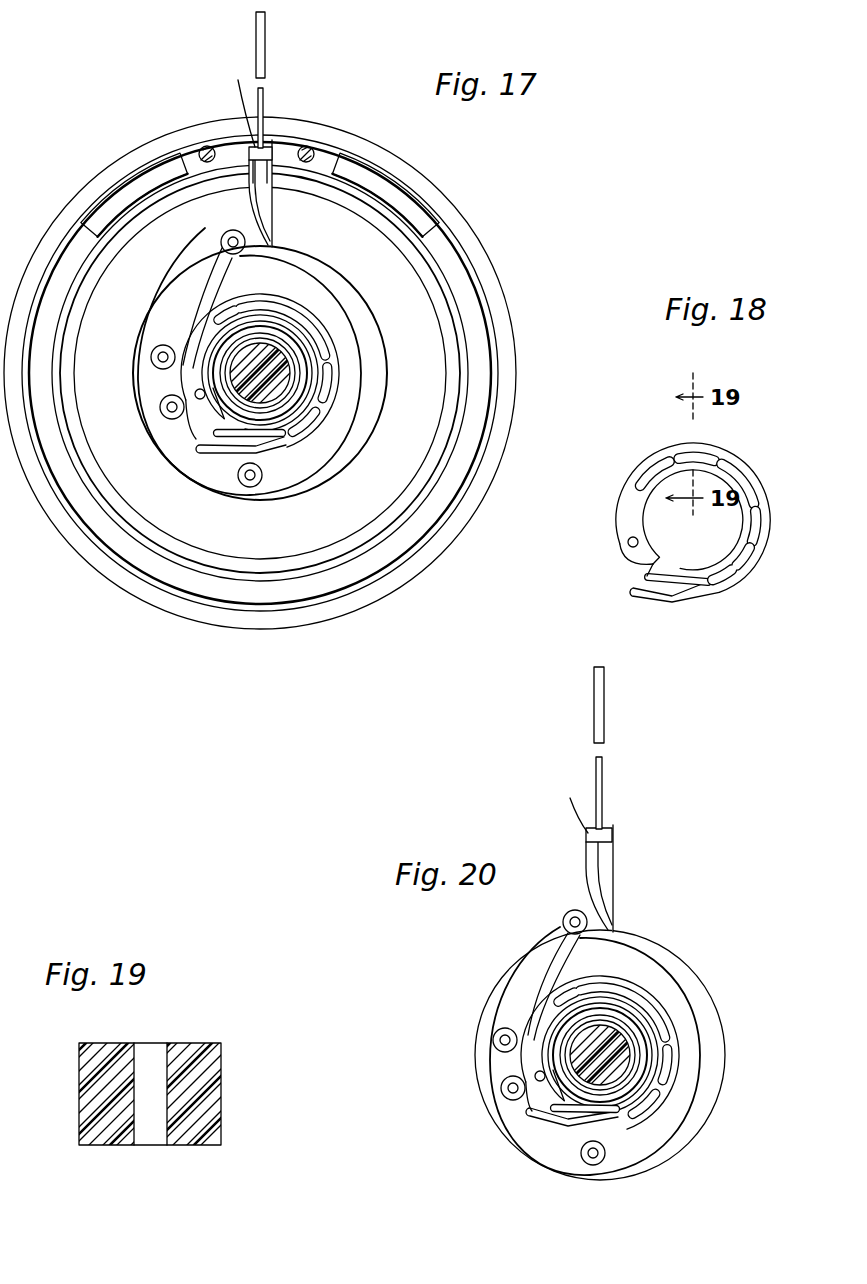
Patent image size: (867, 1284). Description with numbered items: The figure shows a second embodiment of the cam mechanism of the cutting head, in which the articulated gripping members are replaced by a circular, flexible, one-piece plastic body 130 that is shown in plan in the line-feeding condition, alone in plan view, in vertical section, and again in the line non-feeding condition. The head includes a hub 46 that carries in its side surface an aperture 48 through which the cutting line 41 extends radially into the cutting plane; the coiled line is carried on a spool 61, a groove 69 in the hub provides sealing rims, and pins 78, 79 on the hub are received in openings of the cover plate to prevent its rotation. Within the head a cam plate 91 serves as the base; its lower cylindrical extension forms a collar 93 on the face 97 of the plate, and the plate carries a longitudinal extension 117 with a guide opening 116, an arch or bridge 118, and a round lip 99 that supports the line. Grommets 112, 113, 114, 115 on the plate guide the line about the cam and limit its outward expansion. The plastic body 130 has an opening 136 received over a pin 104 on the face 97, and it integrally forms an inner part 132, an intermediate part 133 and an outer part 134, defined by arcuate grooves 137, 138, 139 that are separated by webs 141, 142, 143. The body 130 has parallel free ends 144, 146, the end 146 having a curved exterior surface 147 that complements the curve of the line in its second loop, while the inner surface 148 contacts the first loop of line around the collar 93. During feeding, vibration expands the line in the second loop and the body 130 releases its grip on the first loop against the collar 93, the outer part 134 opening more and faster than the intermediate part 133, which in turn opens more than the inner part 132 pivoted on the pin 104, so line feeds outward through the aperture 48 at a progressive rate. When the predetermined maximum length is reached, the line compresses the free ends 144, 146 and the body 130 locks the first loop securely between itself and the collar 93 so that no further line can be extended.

In FIG. 17, the cutting line 41 is at (284, 43).
In FIG. 20, the cutting line 41 is at (593, 728).
In FIG. 17, the hub 46 is at (450, 211).
In FIG. 17, the aperture 48 is at (277, 152).
In FIG. 17, the spool 61 is at (308, 531).
In FIG. 17, the groove 69 is at (368, 178).
In FIG. 17, the pin 78 is at (205, 150).
In FIG. 17, the pin 79 is at (310, 150).
In FIG. 17, the cam plate 91 is at (372, 330).
In FIG. 20, the cam plate 91 is at (728, 1032).
In FIG. 17, the cylindrical extension 93 is at (262, 332).
In FIG. 20, the cylindrical extension 93 is at (603, 1015).
In FIG. 17, the face 97 is at (372, 425).
In FIG. 20, the face 97 is at (702, 1006).
In FIG. 17, the round lip 99 is at (264, 125).
In FIG. 20, the round lip 99 is at (604, 820).
In FIG. 17, the pin 104 is at (200, 418).
In FIG. 17, the grommet 112 is at (160, 407).
In FIG. 20, the grommet 112 is at (501, 1092).
In FIG. 17, the grommet 113 is at (245, 485).
In FIG. 20, the grommet 113 is at (588, 1165).
In FIG. 17, the grommet 114 is at (151, 355).
In FIG. 20, the grommet 114 is at (493, 1040).
In FIG. 17, the grommet 115 is at (221, 240).
In FIG. 20, the grommet 115 is at (562, 920).
In FIG. 17, the guide opening 116 is at (178, 493).
In FIG. 20, the guide opening 116 is at (571, 803).
In FIG. 17, the longitudinal extension 117 is at (277, 216).
In FIG. 20, the longitudinal extension 117 is at (616, 864).
In FIG. 17, the bridge 118 is at (249, 150).
In FIG. 20, the bridge 118 is at (612, 836).
In FIG. 17, the plastic body 130 is at (292, 370).
In FIG. 18, the plastic body 130 is at (689, 530).
In FIG. 20, the plastic body 130 is at (603, 1065).
In FIG. 17, the inner part 132 is at (207, 328).
In FIG. 18, the inner part 132 is at (603, 535).
In FIG. 20, the inner part 132 is at (548, 1003).
In FIG. 17, the intermediate part 133 is at (300, 321).
In FIG. 18, the intermediate part 133 is at (754, 465).
In FIG. 19, the intermediate part 133 is at (216, 1108).
In FIG. 20, the intermediate part 133 is at (640, 995).
In FIG. 17, the outer part 134 is at (340, 454).
In FIG. 18, the outer part 134 is at (762, 576).
In FIG. 20, the outer part 134 is at (673, 1148).
In FIG. 18, the opening 136 is at (595, 549).
In FIG. 18, the arcuate groove 137 is at (672, 517).
In FIG. 18, the arcuate groove 138 is at (711, 434).
In FIG. 19, the arcuate groove 138 is at (152, 1135).
In FIG. 18, the arcuate groove 139 is at (778, 541).
In FIG. 18, the web 141 is at (631, 454).
In FIG. 18, the web 142 is at (789, 499).
In FIG. 18, the web 143 is at (721, 596).
In FIG. 18, the free end 144 is at (633, 579).
In FIG. 20, the free end 144 is at (548, 1147).
In FIG. 18, the free end 146 is at (638, 601).
In FIG. 20, the free end 146 is at (534, 1128).
In FIG. 18, the curved exterior surface 147 is at (641, 628).
In FIG. 20, the curved exterior surface 147 is at (530, 1174).
In FIG. 18, the inner surface 148 is at (693, 520).